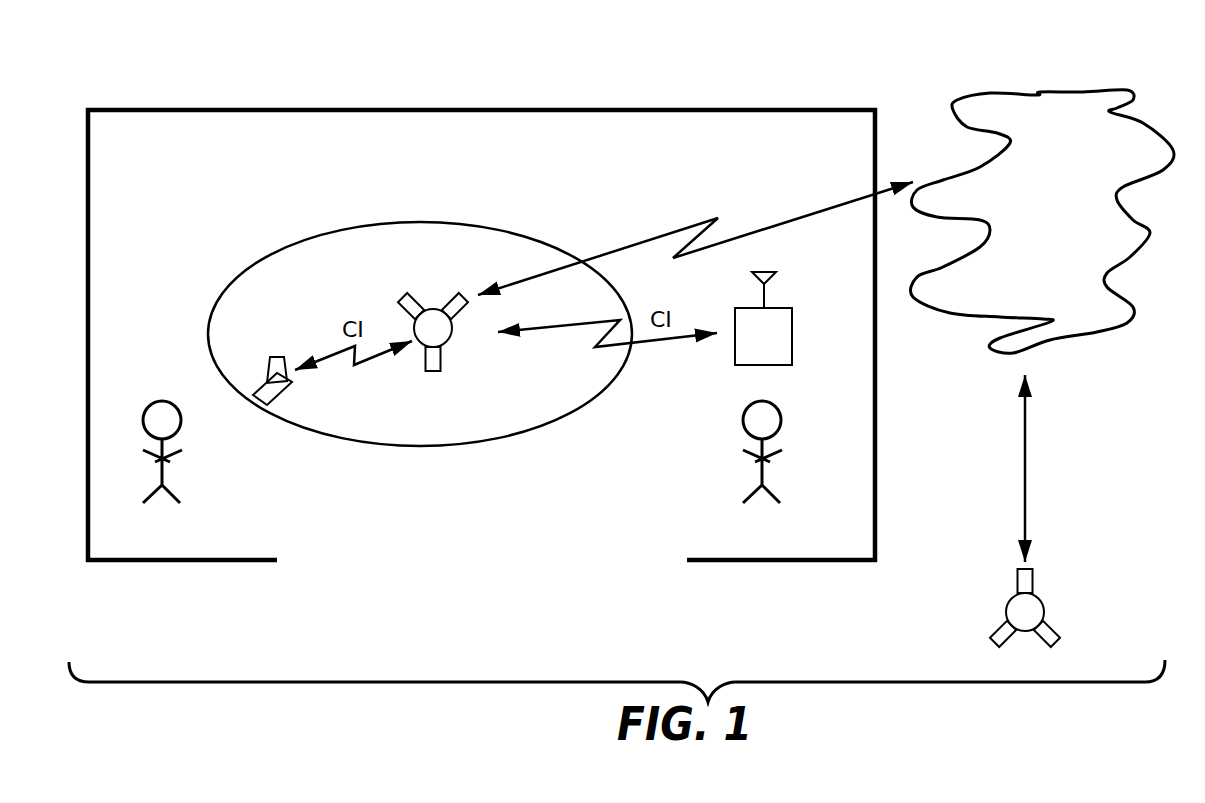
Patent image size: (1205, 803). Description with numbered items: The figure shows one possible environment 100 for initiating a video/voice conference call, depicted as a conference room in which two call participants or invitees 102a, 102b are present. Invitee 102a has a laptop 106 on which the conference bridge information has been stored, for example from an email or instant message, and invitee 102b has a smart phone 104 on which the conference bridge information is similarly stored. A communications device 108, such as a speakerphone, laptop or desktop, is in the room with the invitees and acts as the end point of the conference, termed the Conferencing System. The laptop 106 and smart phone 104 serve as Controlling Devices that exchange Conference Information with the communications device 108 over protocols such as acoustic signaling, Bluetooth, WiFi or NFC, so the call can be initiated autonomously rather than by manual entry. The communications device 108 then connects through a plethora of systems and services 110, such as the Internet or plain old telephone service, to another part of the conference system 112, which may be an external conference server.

The environment 100 is at (770, 70).
The invitee 102a is at (165, 467).
The invitee 102b is at (765, 467).
The smart phone 104 is at (764, 272).
The laptop 106 is at (255, 392).
The communications device 108 is at (436, 310).
The systems and services 110 is at (1052, 92).
The conference system 112 is at (1045, 610).